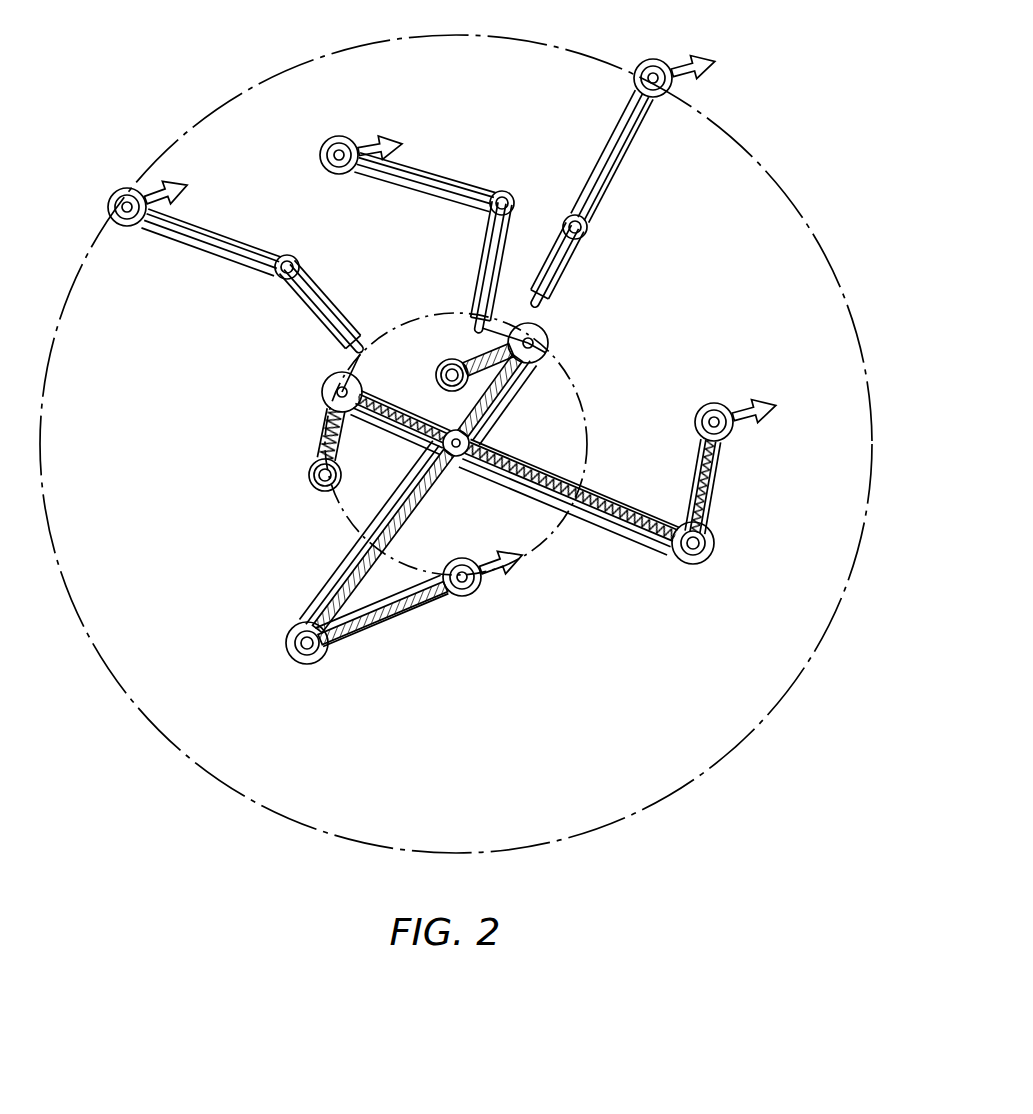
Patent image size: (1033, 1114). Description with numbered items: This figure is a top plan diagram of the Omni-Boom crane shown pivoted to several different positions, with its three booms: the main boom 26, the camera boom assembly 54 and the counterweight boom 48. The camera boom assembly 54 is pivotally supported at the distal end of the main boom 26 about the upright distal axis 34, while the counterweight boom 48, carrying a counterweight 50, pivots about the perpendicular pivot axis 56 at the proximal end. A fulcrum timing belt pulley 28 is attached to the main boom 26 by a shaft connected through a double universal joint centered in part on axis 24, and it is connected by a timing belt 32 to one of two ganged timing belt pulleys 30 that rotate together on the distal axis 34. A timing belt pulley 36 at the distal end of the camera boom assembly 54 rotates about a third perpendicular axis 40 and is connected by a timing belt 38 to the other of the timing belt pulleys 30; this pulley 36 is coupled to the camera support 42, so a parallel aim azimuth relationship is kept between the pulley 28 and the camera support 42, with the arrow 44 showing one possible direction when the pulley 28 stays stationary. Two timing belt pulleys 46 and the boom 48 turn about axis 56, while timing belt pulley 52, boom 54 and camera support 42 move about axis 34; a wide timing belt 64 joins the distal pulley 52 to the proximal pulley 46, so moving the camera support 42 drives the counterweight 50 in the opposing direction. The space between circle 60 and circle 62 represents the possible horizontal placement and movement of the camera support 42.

The axis 24 is at (497, 431).
The main boom 26 is at (326, 290).
The timing belt pulley 28 is at (462, 458).
The timing belt pulleys 30 is at (300, 260).
The timing belt 32 is at (350, 308).
The distal axis 34 is at (278, 280).
The timing belt pulley 36 is at (109, 210).
The timing belt 38 is at (262, 244).
The third perpendicular axis 40 is at (116, 198).
The camera support 42 is at (128, 203).
The arrow 44 is at (166, 186).
The timing belt pulleys 46 is at (322, 395).
The counterweight boom 48 is at (322, 430).
The counterweight 50 is at (309, 478).
The timing belt pulley 52 is at (714, 540).
The camera boom assembly 54 is at (226, 226).
The perpendicular pivot axis 56 is at (336, 386).
The circle 60 is at (548, 536).
The circle 62 is at (668, 792).
The wide timing belt 64 is at (408, 470).